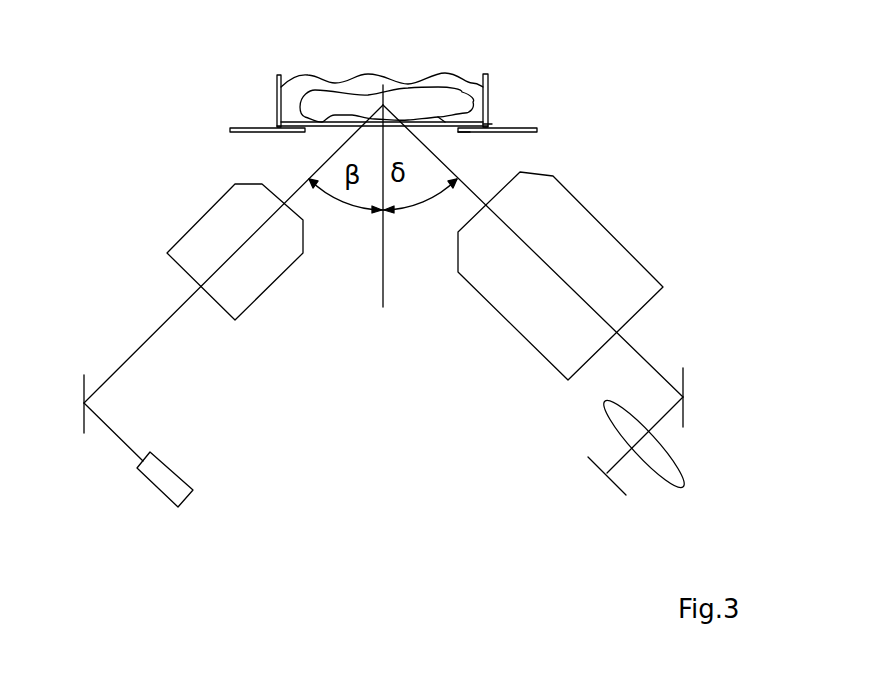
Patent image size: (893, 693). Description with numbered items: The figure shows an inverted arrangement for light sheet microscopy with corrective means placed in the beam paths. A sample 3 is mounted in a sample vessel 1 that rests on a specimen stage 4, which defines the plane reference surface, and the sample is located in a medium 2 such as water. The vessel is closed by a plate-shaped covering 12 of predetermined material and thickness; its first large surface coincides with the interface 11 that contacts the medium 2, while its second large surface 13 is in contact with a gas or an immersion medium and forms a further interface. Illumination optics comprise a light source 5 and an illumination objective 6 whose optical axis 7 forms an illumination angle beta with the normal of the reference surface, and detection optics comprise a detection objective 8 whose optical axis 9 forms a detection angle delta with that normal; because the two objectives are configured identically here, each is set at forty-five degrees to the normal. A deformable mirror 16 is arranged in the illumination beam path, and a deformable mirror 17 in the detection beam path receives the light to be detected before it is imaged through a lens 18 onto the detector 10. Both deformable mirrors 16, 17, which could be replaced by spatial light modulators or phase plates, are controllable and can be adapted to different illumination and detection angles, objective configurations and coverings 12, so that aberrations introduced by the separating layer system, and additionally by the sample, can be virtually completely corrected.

The sample vessel 1 is at (486, 122).
The medium 2 is at (298, 88).
The sample 3 is at (345, 97).
The specimen stage 4 is at (232, 128).
The light source 5 is at (168, 477).
The illumination objective 6 is at (206, 227).
The optical axis of the illumination objective 7 is at (148, 342).
The detection objective 8 is at (602, 237).
The optical axis of the detection objective 9 is at (637, 350).
The detector 10 is at (600, 473).
The interface 11 is at (445, 122).
The plate-shaped covering 12 is at (492, 124).
The second large surface 13 is at (463, 133).
The deformable mirror 16 is at (84, 376).
The deformable mirror 17 is at (687, 379).
The lens 18 is at (670, 469).